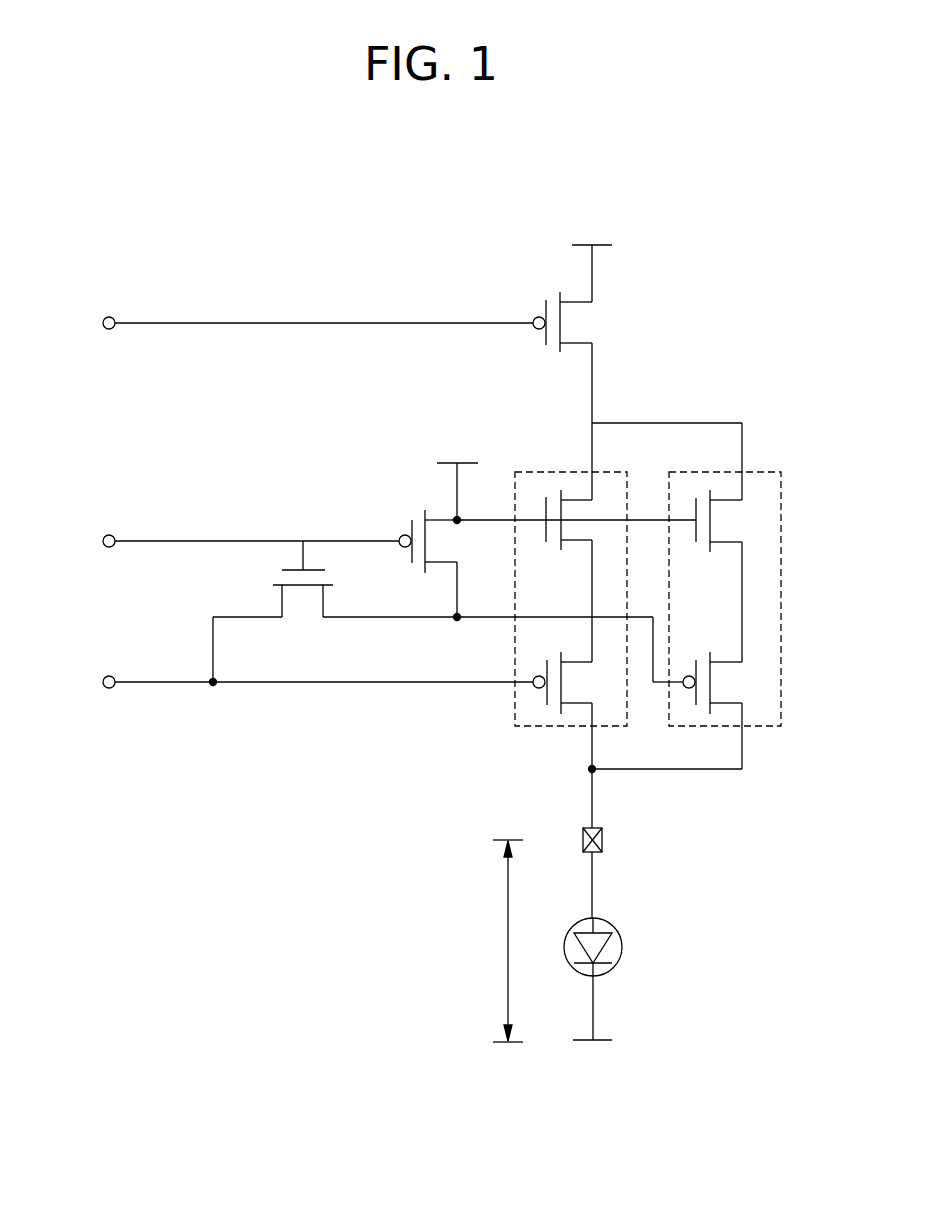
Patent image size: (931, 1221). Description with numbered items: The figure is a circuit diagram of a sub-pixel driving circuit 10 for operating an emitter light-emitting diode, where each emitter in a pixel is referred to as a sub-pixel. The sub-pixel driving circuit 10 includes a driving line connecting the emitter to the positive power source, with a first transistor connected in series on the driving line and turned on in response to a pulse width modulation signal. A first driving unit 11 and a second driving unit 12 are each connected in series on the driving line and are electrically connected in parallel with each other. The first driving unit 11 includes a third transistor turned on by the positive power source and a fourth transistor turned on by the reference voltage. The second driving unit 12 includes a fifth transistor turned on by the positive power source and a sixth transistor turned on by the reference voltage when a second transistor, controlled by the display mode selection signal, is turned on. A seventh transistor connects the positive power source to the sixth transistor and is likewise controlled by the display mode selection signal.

The sub-pixel driving circuit 10 is at (180, 226).
The first driving unit 11 is at (540, 470).
The second driving unit 12 is at (781, 568).